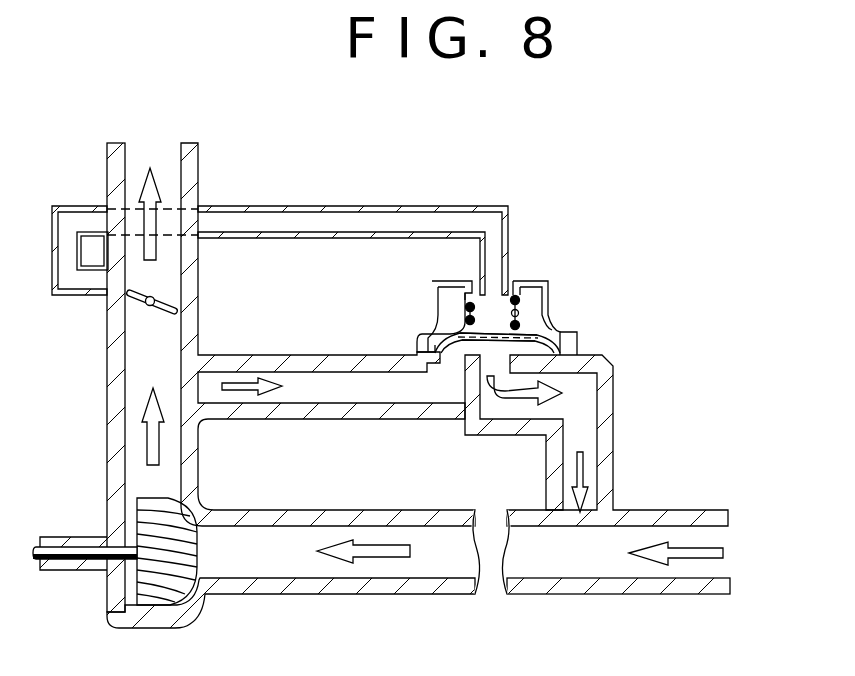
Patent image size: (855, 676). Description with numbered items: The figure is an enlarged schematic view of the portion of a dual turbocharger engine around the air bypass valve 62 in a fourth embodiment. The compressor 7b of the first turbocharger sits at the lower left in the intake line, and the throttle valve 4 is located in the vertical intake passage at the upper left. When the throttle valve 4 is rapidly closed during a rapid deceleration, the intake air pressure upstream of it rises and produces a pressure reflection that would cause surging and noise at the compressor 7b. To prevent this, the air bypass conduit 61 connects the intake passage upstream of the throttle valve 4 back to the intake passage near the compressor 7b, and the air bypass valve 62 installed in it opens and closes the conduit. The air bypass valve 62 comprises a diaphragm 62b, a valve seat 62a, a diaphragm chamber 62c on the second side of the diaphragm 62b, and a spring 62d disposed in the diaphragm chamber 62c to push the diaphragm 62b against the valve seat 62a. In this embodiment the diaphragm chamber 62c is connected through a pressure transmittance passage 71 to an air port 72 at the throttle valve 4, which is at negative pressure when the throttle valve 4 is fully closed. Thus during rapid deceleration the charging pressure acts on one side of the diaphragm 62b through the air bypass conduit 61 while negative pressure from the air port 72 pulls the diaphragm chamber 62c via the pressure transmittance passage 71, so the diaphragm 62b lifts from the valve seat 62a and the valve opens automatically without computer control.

The throttle valve 4 is at (168, 298).
The air bypass conduit 61 is at (307, 390).
The air bypass valve 62 is at (535, 280).
The valve seat 62a is at (547, 343).
The diaphragm 62b is at (553, 328).
The diaphragm chamber 62c is at (537, 317).
The spring 62d is at (465, 307).
The pressure transmittance passage 71 is at (255, 225).
The air port 72 is at (88, 281).
The compressor 7b is at (167, 572).